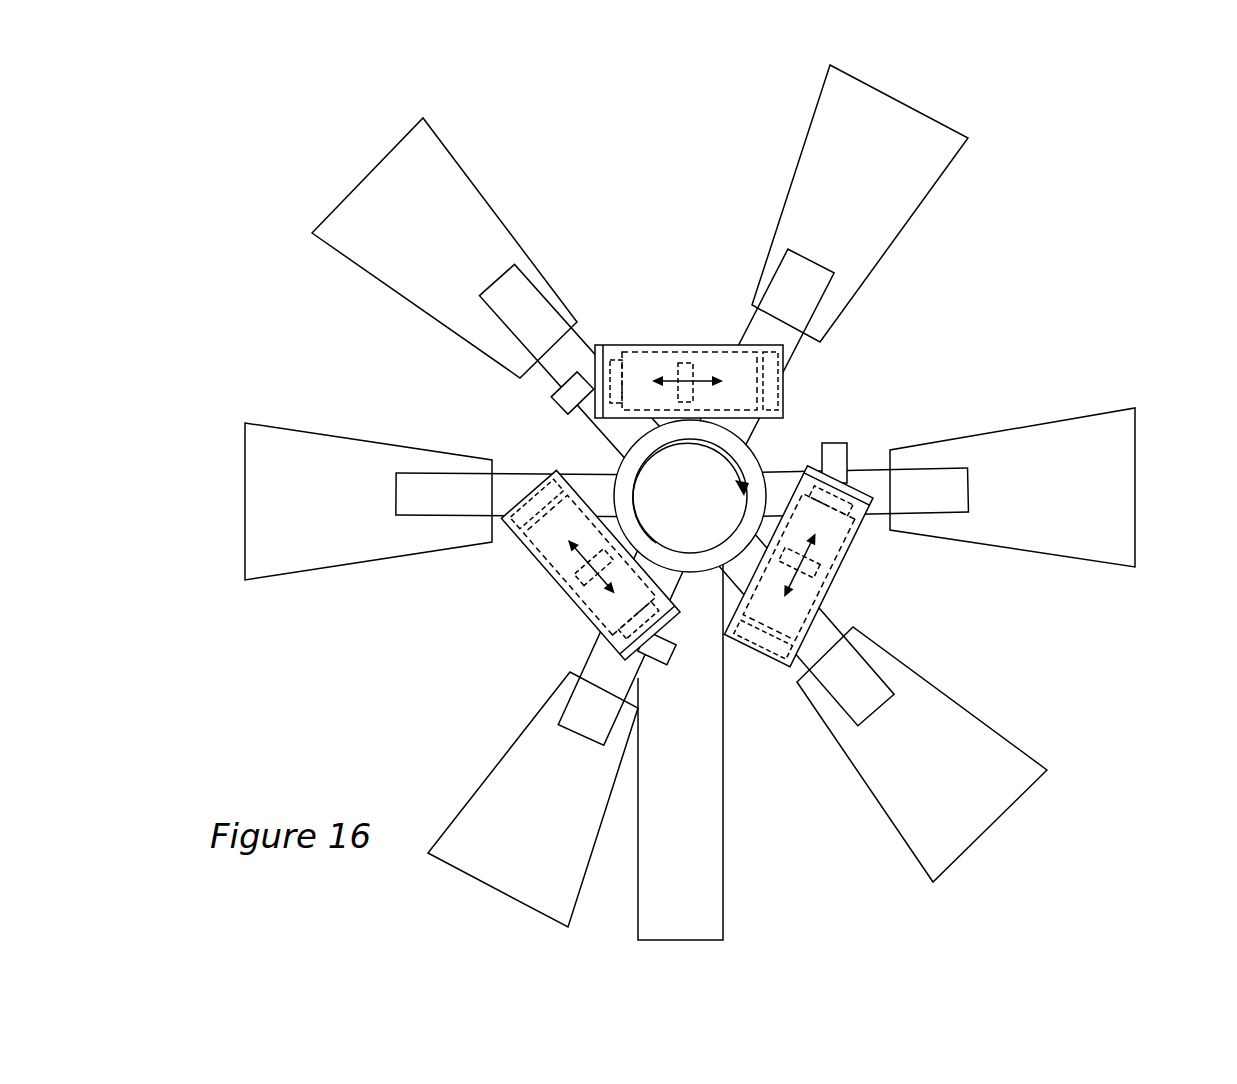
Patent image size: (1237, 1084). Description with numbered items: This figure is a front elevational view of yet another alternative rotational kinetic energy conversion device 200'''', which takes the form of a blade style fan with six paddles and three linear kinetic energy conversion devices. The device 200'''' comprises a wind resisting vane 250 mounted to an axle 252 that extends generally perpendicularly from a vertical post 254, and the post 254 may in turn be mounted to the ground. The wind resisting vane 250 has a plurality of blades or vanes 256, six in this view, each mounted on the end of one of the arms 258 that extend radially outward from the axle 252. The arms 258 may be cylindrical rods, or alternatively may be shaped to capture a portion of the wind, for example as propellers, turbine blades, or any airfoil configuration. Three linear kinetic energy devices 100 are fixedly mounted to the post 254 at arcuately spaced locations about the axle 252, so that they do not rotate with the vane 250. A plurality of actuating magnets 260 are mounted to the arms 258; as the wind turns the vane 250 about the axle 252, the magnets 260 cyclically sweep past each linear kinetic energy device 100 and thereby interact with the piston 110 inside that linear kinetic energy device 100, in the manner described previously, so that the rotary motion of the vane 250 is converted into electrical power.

The rotational kinetic energy conversion device 200'''' is at (729, 502).
The wind resisting vane 250 is at (690, 496).
The axle 252 is at (698, 505).
The vertical post 254 is at (692, 827).
The blades or vanes 256 is at (402, 230).
The arms 258 is at (797, 351).
The actuating magnets 260 is at (576, 372).
The linear kinetic energy device 100 is at (636, 348).
The piston 110 is at (685, 346).